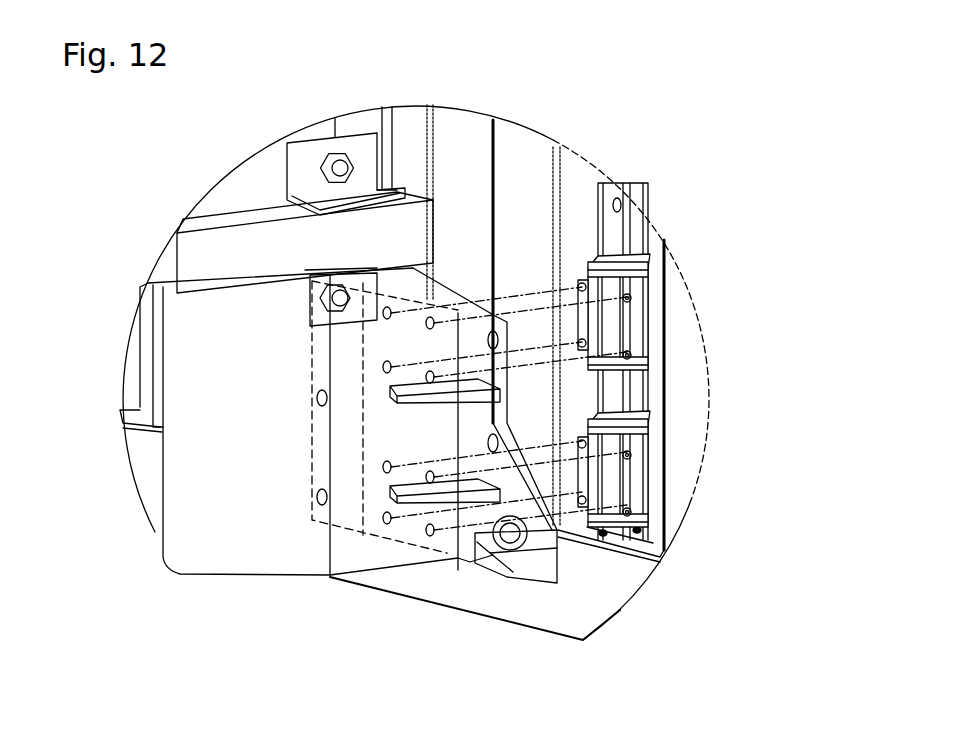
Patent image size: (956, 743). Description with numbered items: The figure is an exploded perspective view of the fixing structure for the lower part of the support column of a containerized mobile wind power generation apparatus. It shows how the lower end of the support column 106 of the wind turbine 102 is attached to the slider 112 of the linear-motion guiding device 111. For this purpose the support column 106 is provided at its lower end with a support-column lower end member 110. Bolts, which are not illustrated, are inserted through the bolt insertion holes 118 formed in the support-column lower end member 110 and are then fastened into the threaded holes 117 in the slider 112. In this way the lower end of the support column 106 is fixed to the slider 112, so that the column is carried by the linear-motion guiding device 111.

The wind turbine 102 is at (238, 303).
The support column 106 is at (230, 540).
The support-column lower end member 110 is at (390, 470).
The linear-motion guiding device 111 is at (650, 227).
The slider 112 is at (652, 493).
The threaded holes 117 is at (572, 358).
The bolt insertion holes 118 is at (433, 377).